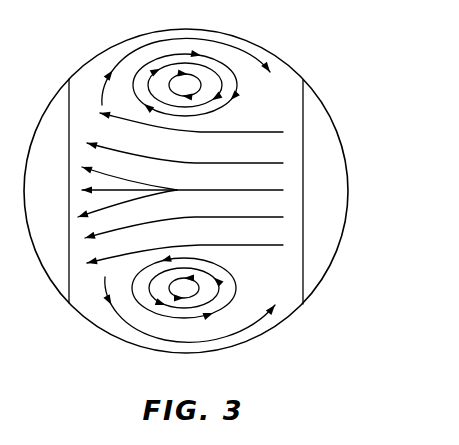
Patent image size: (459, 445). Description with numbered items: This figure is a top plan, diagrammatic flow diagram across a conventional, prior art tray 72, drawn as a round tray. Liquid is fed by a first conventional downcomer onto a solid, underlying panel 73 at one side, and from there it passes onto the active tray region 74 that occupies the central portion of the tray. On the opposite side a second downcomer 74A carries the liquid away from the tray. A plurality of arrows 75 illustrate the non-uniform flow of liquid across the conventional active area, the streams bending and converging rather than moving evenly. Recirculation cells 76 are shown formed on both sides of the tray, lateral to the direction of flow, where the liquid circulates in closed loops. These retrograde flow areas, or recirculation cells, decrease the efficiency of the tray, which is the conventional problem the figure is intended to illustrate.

The prior art tray 72 is at (323, 105).
The solid underlying panel 73 is at (327, 183).
The active tray region 74 is at (267, 100).
The second downcomer 74A is at (60, 103).
The arrows 75 is at (273, 162).
The recirculation cells 76 is at (184, 58).